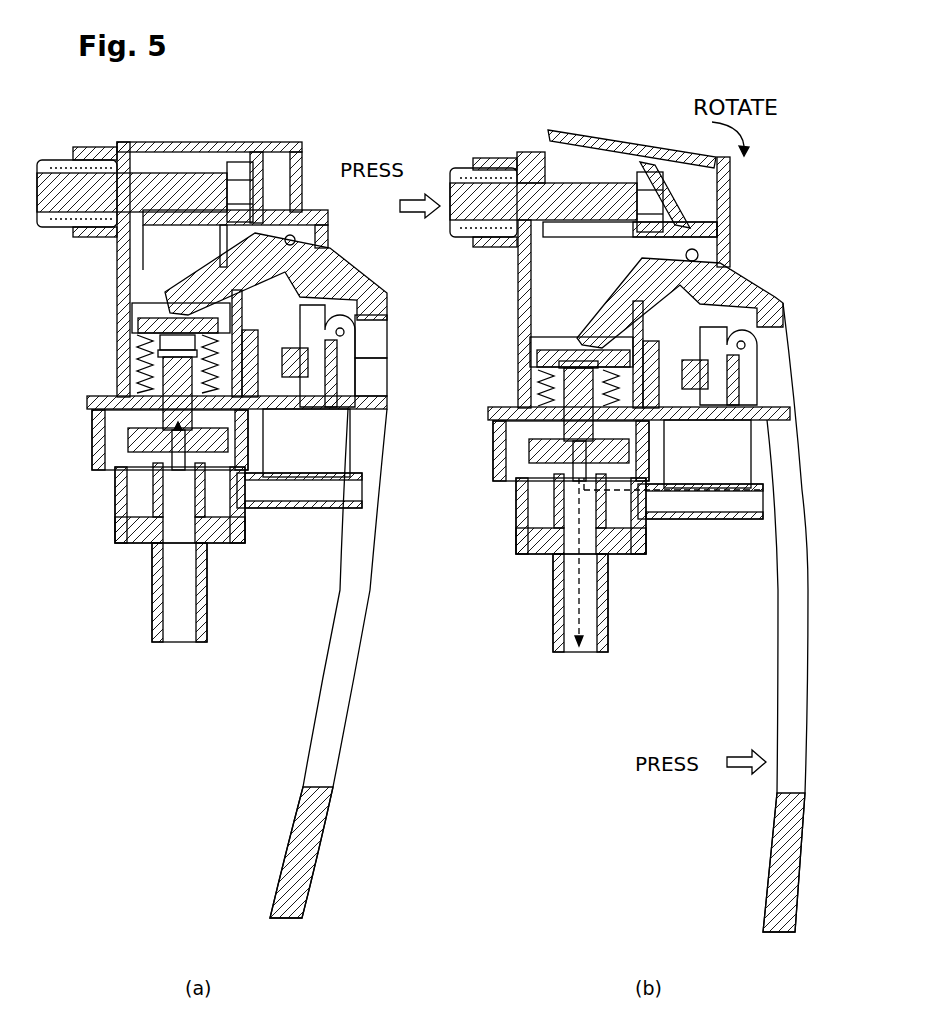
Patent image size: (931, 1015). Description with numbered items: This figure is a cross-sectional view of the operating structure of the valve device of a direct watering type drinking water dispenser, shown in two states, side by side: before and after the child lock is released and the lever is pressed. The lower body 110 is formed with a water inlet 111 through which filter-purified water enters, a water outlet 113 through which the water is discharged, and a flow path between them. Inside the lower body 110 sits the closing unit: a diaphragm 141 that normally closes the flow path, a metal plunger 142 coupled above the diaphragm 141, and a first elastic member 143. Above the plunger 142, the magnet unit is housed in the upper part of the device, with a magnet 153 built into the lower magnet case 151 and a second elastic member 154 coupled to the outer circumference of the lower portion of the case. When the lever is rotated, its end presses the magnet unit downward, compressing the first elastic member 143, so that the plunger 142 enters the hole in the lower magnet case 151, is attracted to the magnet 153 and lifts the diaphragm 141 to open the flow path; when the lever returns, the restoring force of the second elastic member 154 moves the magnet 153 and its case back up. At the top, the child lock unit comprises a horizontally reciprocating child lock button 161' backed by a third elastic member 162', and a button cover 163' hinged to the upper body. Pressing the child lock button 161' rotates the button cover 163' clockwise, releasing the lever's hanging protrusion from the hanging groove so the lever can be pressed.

The lower body 110 is at (127, 543).
The water inlet 111 is at (290, 508).
The water outlet 113 is at (180, 632).
The diaphragm 141 is at (142, 443).
The plunger 142 is at (165, 400).
The first elastic member 143 is at (170, 373).
The lower magnet case 151 is at (130, 322).
The magnet 153 is at (157, 320).
The second elastic member 154 is at (137, 357).
The child lock button 161' is at (350, 158).
The third elastic member 162' is at (268, 175).
The button cover 163' is at (449, 176).